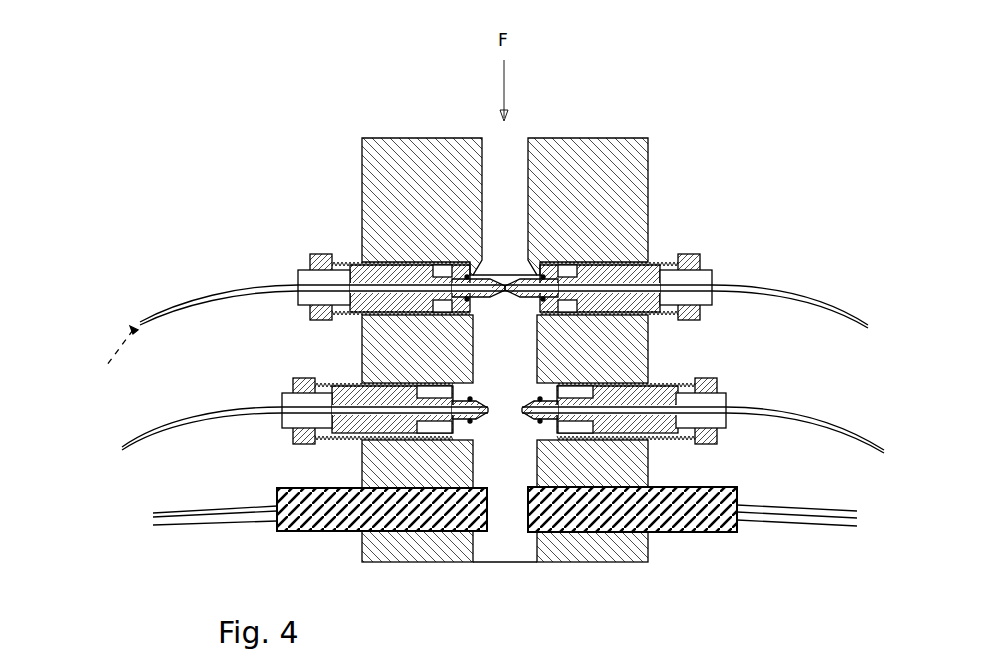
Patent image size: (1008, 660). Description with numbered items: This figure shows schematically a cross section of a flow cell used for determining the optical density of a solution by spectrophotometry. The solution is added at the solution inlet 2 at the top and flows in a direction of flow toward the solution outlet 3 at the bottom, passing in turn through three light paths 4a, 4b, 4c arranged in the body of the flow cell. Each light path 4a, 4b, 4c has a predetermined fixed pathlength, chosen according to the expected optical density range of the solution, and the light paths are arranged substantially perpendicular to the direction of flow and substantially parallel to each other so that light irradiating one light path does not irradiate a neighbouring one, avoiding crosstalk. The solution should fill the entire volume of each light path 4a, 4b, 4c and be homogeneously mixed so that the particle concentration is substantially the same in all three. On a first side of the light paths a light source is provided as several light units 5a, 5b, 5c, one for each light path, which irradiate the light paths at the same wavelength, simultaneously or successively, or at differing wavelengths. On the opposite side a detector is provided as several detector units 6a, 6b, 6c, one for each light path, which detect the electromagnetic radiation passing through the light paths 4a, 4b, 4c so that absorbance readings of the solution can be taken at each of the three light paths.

The solution inlet 2 is at (522, 116).
The solution outlet 3 is at (510, 606).
The light path 4a is at (503, 275).
The light path 4b is at (505, 400).
The light path 4c is at (509, 531).
The light source 5a is at (298, 281).
The light source 5b is at (282, 404).
The light source 5c is at (277, 500).
The detector 6a is at (712, 302).
The detector 6b is at (722, 421).
The detector 6c is at (713, 528).